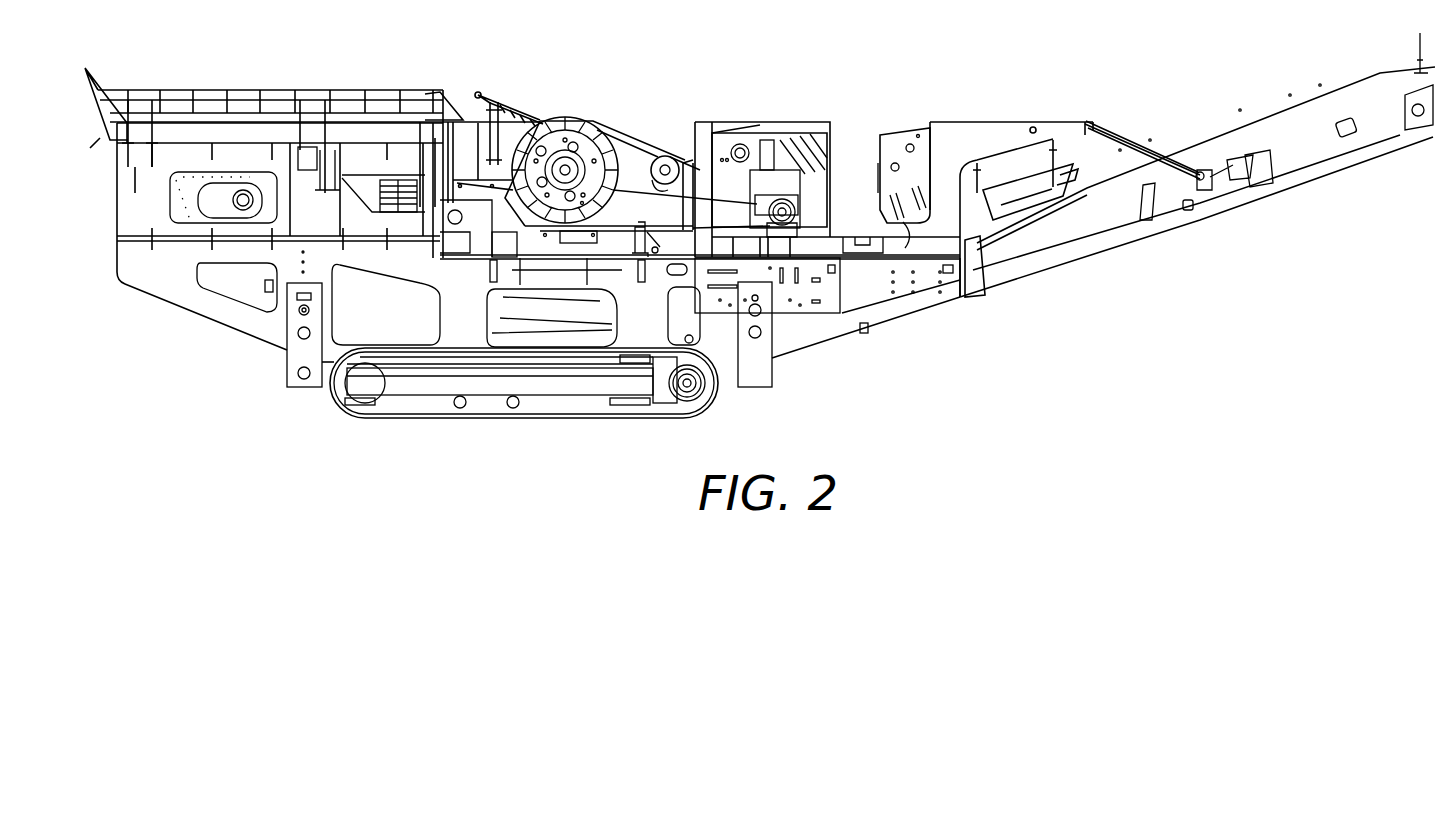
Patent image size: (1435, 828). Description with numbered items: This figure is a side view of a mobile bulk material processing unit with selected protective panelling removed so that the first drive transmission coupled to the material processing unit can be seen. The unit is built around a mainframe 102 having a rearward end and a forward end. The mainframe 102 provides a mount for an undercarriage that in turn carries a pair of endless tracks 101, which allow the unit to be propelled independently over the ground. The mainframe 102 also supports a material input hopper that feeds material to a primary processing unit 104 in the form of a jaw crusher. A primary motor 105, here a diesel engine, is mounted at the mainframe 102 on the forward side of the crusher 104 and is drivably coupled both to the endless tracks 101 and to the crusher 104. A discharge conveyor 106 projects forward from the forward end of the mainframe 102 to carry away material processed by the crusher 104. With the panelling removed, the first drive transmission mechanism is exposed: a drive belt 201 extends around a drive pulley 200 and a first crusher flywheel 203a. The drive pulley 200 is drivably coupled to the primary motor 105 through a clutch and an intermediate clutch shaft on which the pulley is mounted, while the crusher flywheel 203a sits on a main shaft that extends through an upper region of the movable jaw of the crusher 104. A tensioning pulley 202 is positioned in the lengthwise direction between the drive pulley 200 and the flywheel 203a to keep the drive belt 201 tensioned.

The endless tracks 101 is at (650, 417).
The mainframe 102 is at (472, 328).
The primary processing unit 104 is at (497, 160).
The primary motor 105 is at (820, 197).
The discharge conveyor 106 is at (1300, 155).
The drive pulley 200 is at (797, 183).
The drive belt 201 is at (612, 150).
The tensioning pulley 202 is at (667, 157).
The first crusher flywheel 203a is at (565, 127).